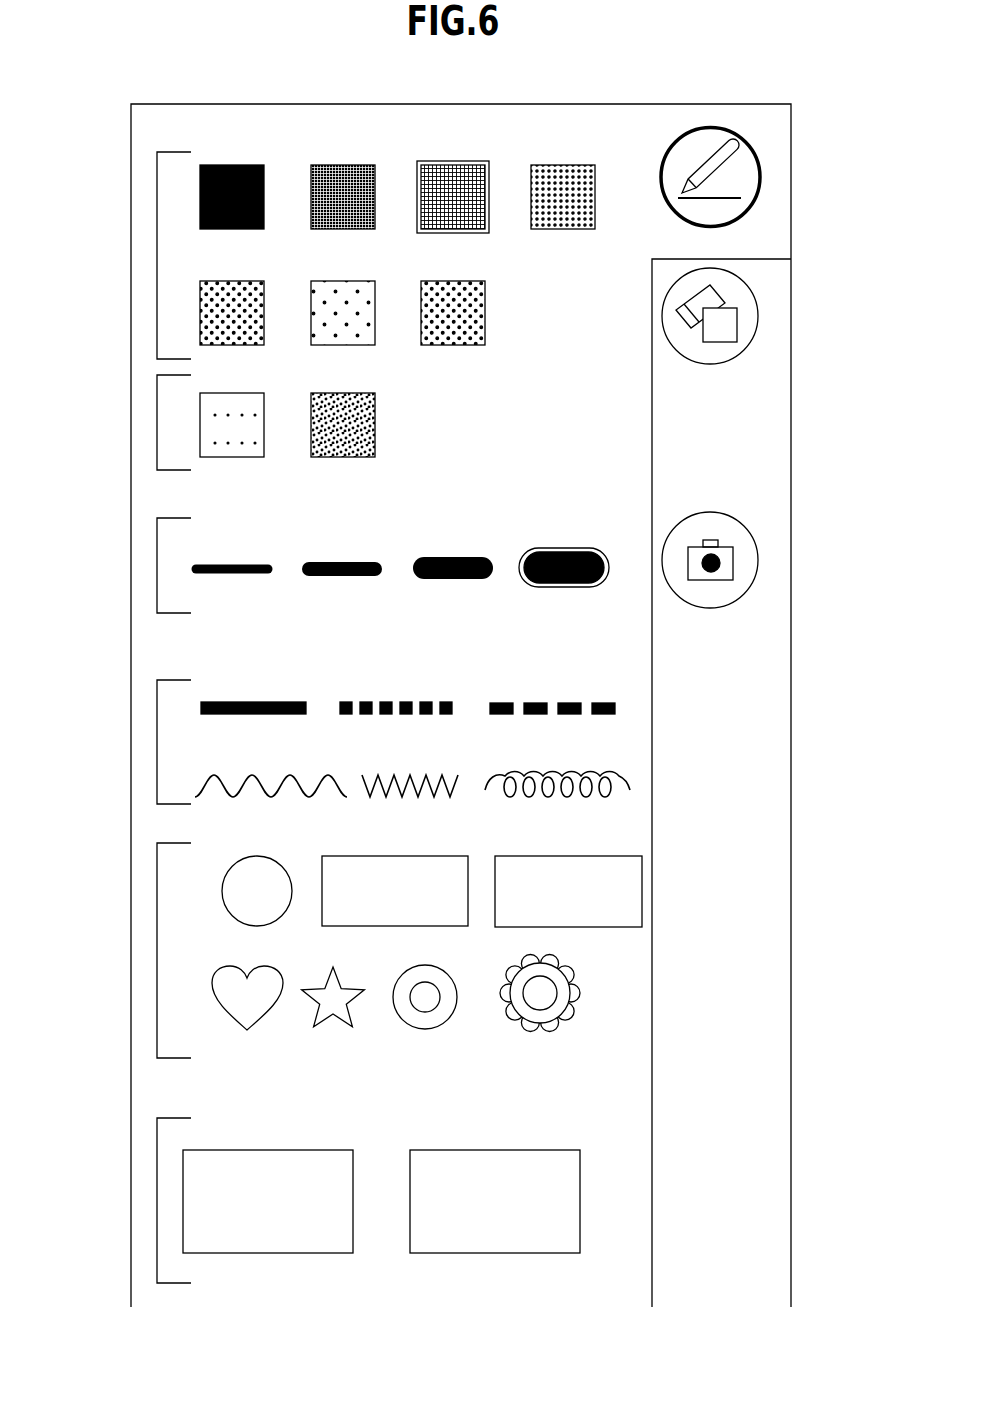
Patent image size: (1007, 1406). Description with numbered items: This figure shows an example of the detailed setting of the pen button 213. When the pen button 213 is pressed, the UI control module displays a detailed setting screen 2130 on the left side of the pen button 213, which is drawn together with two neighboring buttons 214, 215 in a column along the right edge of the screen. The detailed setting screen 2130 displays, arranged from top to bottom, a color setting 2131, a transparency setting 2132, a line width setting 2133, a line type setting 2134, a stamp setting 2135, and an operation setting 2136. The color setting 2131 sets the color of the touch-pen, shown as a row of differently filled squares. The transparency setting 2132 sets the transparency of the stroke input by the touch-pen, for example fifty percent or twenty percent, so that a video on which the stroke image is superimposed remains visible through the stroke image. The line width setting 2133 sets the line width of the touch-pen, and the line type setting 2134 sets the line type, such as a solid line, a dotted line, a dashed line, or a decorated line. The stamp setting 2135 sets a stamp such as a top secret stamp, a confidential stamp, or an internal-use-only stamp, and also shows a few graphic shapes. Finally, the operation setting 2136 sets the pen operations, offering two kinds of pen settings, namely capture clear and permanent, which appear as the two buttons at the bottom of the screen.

The detailed setting screen 2130 is at (482, 128).
The color setting 2131 is at (157, 257).
The transparency setting 2132 is at (157, 423).
The line width setting 2133 is at (157, 567).
The line type setting 2134 is at (157, 745).
The stamp setting 2135 is at (157, 955).
The operation setting 2136 is at (157, 1205).
The pen button 213 is at (748, 143).
The eraser button 214 is at (746, 282).
The capture button 215 is at (746, 500).